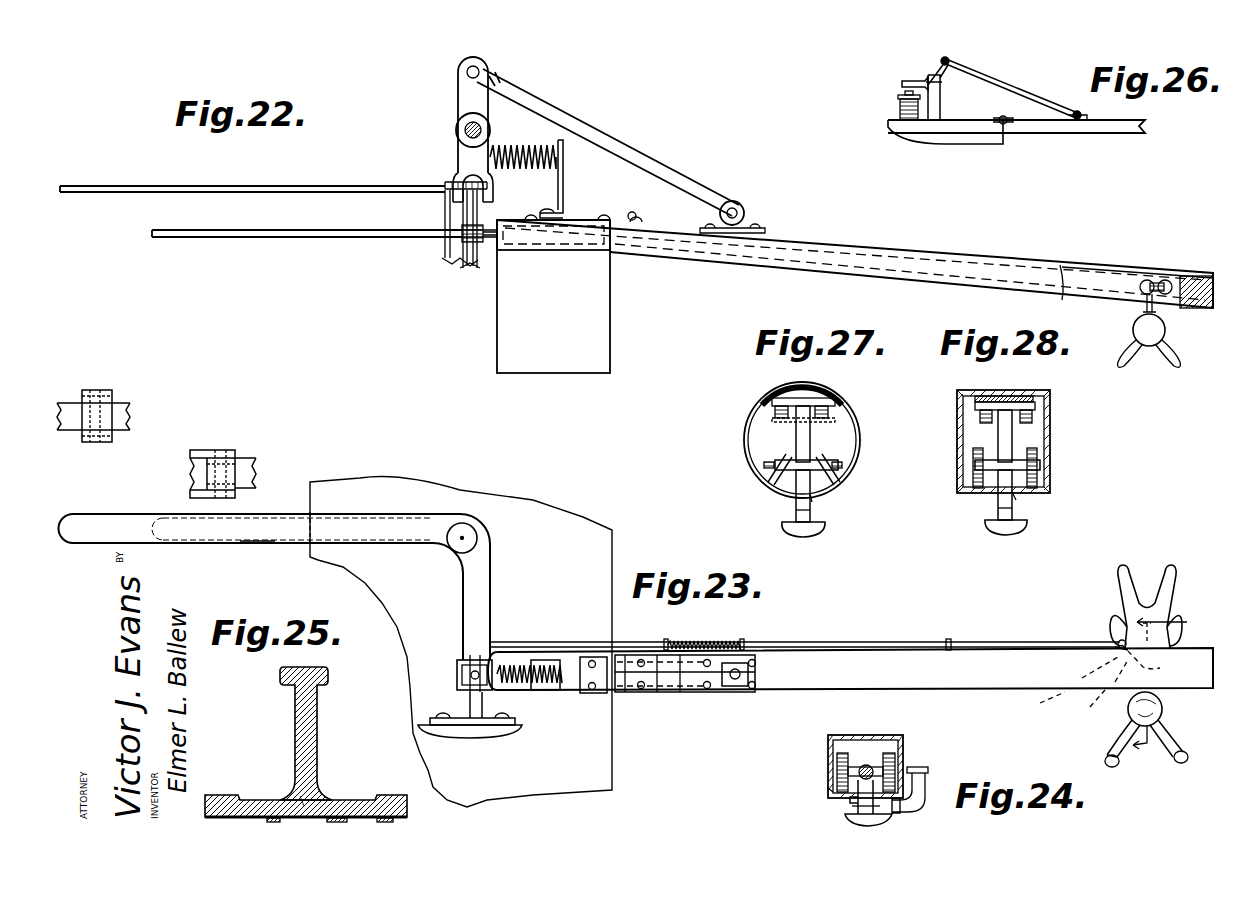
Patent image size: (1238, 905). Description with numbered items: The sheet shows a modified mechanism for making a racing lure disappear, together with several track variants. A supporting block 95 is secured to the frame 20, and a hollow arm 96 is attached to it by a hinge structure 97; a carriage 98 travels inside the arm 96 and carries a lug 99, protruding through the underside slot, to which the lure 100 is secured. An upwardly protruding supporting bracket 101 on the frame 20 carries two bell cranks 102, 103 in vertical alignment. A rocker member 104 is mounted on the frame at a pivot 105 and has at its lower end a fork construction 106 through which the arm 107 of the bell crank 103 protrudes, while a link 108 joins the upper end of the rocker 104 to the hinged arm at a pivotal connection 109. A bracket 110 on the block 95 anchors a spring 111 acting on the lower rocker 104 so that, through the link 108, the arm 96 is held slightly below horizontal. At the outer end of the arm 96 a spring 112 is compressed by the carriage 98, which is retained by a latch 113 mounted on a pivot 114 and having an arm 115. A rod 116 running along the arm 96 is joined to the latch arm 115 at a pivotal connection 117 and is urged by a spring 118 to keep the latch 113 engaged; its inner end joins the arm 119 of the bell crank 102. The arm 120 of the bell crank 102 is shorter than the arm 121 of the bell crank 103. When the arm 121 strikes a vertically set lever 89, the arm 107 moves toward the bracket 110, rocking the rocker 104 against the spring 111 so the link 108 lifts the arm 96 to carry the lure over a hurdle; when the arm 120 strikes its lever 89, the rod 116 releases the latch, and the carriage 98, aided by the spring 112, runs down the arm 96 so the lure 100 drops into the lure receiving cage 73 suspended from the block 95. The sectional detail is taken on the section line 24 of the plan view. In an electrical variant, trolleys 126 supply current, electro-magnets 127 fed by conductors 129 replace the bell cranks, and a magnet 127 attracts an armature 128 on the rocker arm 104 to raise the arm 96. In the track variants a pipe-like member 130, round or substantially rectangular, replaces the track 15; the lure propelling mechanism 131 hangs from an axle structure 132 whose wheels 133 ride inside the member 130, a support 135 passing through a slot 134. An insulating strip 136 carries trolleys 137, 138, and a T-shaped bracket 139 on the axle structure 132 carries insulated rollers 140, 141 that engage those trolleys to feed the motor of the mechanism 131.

In FIG. 25, the track 15 is at (312, 730).
In FIG. 23, the frame 20 is at (468, 738).
In FIG. 23, the section line 24 is at (1158, 666).
In FIG. 22, the lure receiving cage 73 is at (598, 343).
In FIG. 23, the lever 89 is at (130, 420).
In FIG. 22, the supporting block 95 is at (567, 227).
In FIG. 26, the supporting block 95 is at (991, 136).
In FIG. 23, the supporting block 95 is at (592, 694).
In FIG. 22, the arm 96 is at (805, 232).
In FIG. 26, the arm 96 is at (1042, 133).
In FIG. 23, the arm 96 is at (790, 690).
In FIG. 24, the arm 96 is at (902, 738).
In FIG. 22, the hinge structure 97 is at (612, 218).
In FIG. 26, the hinge structure 97 is at (1003, 116).
In FIG. 23, the hinge structure 97 is at (630, 693).
In FIG. 22, the carriage 98 is at (1150, 280).
In FIG. 24, the carriage 98 is at (860, 765).
In FIG. 22, the lug 99 is at (1140, 300).
In FIG. 23, the lug 99 is at (1152, 668).
In FIG. 24, the lug 99 is at (857, 799).
In FIG. 22, the lure 100 is at (1142, 362).
In FIG. 23, the lure 100 is at (1115, 767).
In FIG. 24, the lure 100 is at (892, 818).
In FIG. 22, the supporting bracket 101 is at (447, 272).
In FIG. 22, the bell crank 102 is at (358, 238).
In FIG. 23, the bell crank 102 is at (264, 542).
In FIG. 22, the bell crank 103 is at (430, 186).
In FIG. 23, the bell crank 103 is at (340, 522).
In FIG. 22, the rocker member 104 is at (466, 102).
In FIG. 26, the rocker member 104 is at (940, 68).
In FIG. 23, the rocker member 104 is at (457, 666).
In FIG. 22, the pivot 105 is at (455, 131).
In FIG. 22, the fork construction 106 is at (494, 199).
In FIG. 22, the arm 107 is at (488, 185).
In FIG. 23, the arm 107 is at (480, 624).
In FIG. 22, the link 108 is at (605, 142).
In FIG. 26, the link 108 is at (1012, 96).
In FIG. 23, the link 108 is at (683, 690).
In FIG. 22, the pivotal connection 109 is at (745, 210).
In FIG. 23, the pivotal connection 109 is at (750, 662).
In FIG. 22, the bracket 110 is at (563, 186).
In FIG. 23, the bracket 110 is at (556, 692).
In FIG. 22, the spring 111 is at (545, 144).
In FIG. 23, the spring 111 is at (520, 693).
In FIG. 22, the spring 112 is at (1200, 270).
In FIG. 23, the latch 113 is at (1090, 706).
In FIG. 24, the latch 113 is at (830, 792).
In FIG. 23, the pivot 114 is at (1040, 712).
In FIG. 24, the pivot 114 is at (928, 812).
In FIG. 23, the arm 115 is at (1110, 642).
In FIG. 24, the arm 115 is at (930, 780).
In FIG. 23, the rod 116 is at (858, 642).
In FIG. 24, the rod 116 is at (930, 772).
In FIG. 23, the pivotal connection 117 is at (1120, 642).
In FIG. 24, the pivotal connection 117 is at (933, 766).
In FIG. 23, the spring 118 is at (722, 640).
In FIG. 22, the arm 119 is at (466, 238).
In FIG. 22, the arm 120 is at (263, 238).
In FIG. 23, the arm 120 is at (197, 540).
In FIG. 22, the arm 121 is at (222, 190).
In FIG. 23, the arm 121 is at (92, 516).
In FIG. 25, the trolleys 126 is at (332, 803).
In FIG. 26, the electro-magnet 127 is at (898, 106).
In FIG. 26, the armature 128 is at (902, 82).
In FIG. 25, the conductors 129 is at (228, 810).
In FIG. 27, the pipe-like member 130 is at (776, 476).
In FIG. 28, the pipe-like member 130 is at (1045, 470).
In FIG. 27, the lure propelling mechanism 131 is at (826, 530).
In FIG. 28, the lure propelling mechanism 131 is at (1015, 534).
In FIG. 27, the axle structure 132 is at (835, 492).
In FIG. 28, the axle structure 132 is at (1022, 496).
In FIG. 27, the wheels 133 is at (770, 470).
In FIG. 28, the wheels 133 is at (1040, 455).
In FIG. 27, the slot 134 is at (812, 500).
In FIG. 28, the slot 134 is at (1014, 500).
In FIG. 27, the support 135 is at (795, 508).
In FIG. 28, the support 135 is at (996, 506).
In FIG. 27, the insulating strip 136 is at (830, 392).
In FIG. 28, the insulating strip 136 is at (1040, 394).
In FIG. 27, the trolley 137 is at (838, 408).
In FIG. 28, the trolley 137 is at (1040, 408).
In FIG. 27, the trolley 138 is at (765, 400).
In FIG. 28, the trolley 138 is at (1005, 390).
In FIG. 27, the bracket 139 is at (796, 436).
In FIG. 28, the bracket 139 is at (1012, 440).
In FIG. 27, the roller 140 is at (845, 424).
In FIG. 27, the roller 141 is at (770, 414).
In FIG. 28, the roller 141 is at (980, 420).